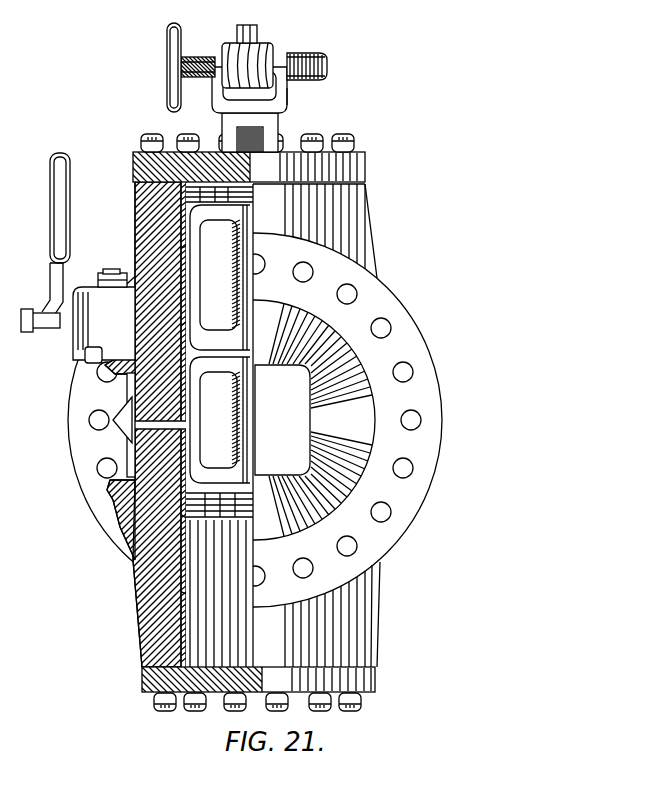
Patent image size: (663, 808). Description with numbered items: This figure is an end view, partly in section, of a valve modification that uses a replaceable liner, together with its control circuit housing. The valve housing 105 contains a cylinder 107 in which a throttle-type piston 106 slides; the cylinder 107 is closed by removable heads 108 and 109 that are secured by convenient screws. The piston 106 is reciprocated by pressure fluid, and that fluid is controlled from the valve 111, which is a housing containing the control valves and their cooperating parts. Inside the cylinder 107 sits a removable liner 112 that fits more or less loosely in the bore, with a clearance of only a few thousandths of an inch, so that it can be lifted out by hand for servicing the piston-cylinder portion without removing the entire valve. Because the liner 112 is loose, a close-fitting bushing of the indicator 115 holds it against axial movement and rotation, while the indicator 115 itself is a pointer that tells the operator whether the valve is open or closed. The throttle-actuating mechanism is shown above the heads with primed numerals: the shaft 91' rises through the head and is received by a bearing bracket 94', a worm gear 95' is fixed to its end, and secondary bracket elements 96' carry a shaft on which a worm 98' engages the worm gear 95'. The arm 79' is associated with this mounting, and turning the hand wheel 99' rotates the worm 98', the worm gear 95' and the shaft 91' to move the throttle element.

The valve housing 105 is at (378, 610).
The piston 106 is at (136, 237).
The cylinder 107 is at (210, 603).
The removable head 108 is at (378, 676).
The removable head 109 is at (136, 164).
The valve 111 is at (90, 341).
The removable liner 112 is at (136, 200).
The indicator 115 is at (112, 440).
The arm 79' is at (314, 94).
The shaft 91' is at (248, 21).
The bearing bracket 94' is at (234, 132).
The worm gear 95' is at (264, 66).
The secondary bracket element 96' is at (260, 95).
The worm 98' is at (256, 47).
The hand wheel 99' is at (191, 59).